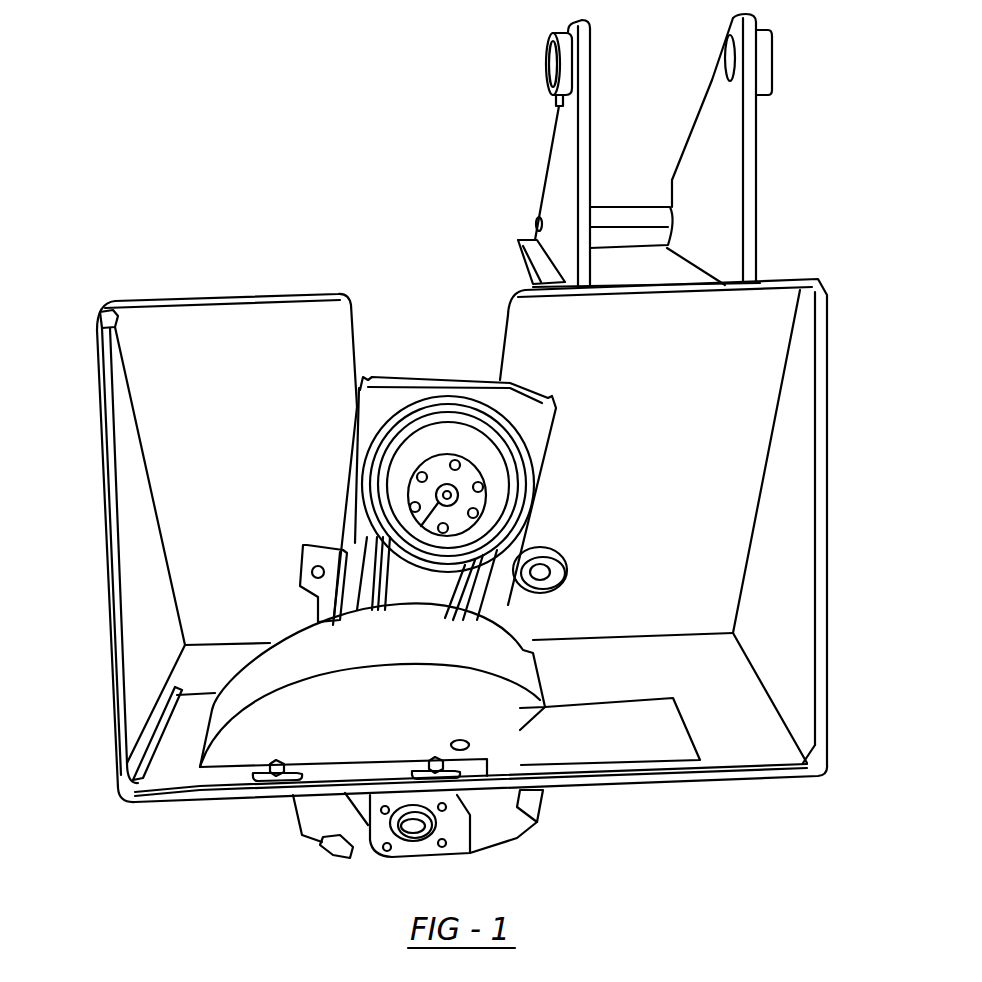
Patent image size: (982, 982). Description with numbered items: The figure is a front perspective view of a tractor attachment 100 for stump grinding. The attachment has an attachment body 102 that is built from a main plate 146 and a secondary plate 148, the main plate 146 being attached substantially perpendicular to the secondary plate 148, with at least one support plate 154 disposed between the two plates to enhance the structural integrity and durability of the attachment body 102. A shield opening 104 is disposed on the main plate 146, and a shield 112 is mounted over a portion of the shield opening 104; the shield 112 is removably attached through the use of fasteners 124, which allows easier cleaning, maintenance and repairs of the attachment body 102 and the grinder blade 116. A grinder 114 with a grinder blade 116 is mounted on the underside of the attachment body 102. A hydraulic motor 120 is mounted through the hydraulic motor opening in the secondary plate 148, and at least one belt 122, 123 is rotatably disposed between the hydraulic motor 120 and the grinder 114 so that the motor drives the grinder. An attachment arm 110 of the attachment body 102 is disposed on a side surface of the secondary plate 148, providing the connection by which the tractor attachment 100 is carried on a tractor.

The tractor attachment 100 is at (236, 121).
The attachment body 102 is at (177, 299).
The shield opening 104 is at (583, 745).
The attachment arm 110 is at (757, 182).
The shield 112 is at (213, 766).
The grinder 114 is at (387, 827).
The grinder blade 116 is at (303, 840).
The hydraulic motor 120 is at (433, 456).
The belt 122 is at (470, 583).
The belt 123 is at (480, 608).
The fasteners 124 is at (467, 787).
The main plate 146 is at (777, 785).
The secondary plate 148 is at (283, 297).
The support plate 154 is at (110, 555).